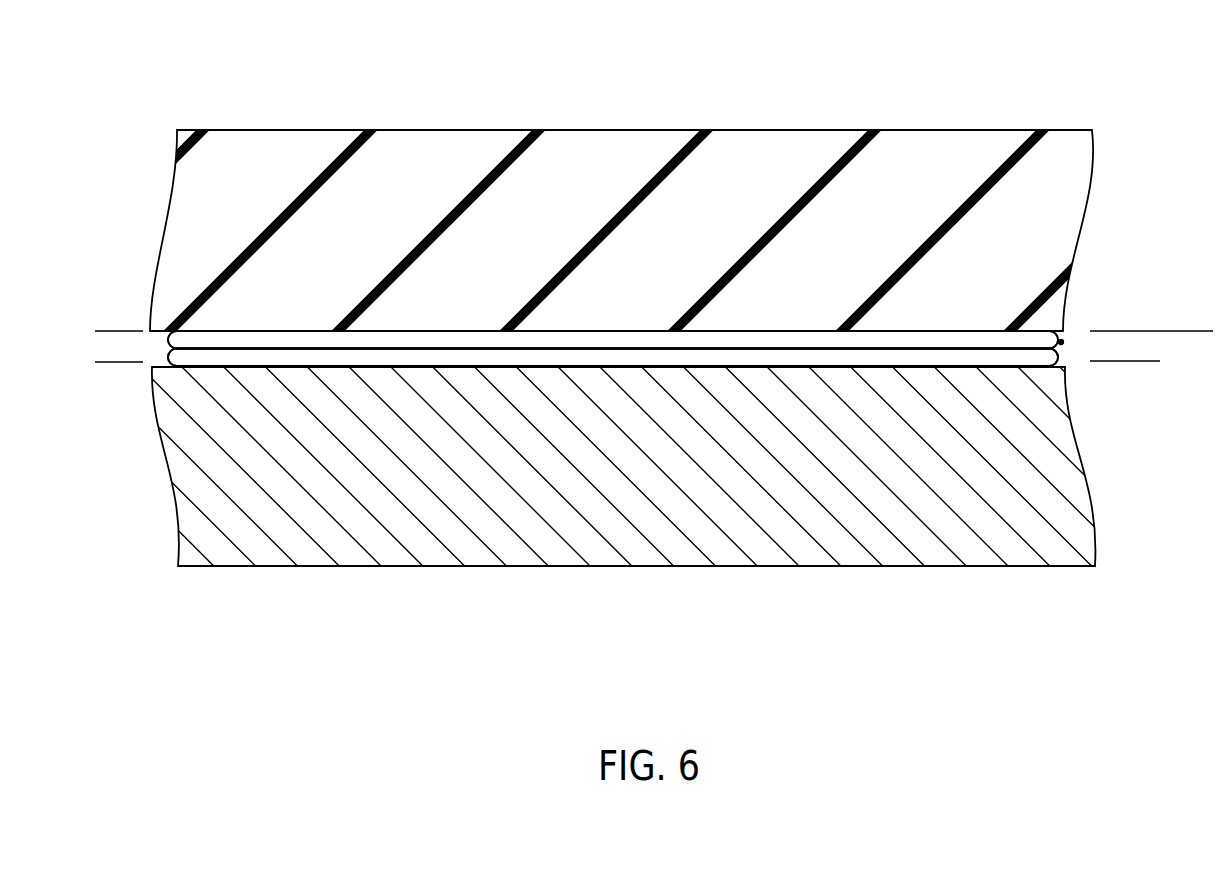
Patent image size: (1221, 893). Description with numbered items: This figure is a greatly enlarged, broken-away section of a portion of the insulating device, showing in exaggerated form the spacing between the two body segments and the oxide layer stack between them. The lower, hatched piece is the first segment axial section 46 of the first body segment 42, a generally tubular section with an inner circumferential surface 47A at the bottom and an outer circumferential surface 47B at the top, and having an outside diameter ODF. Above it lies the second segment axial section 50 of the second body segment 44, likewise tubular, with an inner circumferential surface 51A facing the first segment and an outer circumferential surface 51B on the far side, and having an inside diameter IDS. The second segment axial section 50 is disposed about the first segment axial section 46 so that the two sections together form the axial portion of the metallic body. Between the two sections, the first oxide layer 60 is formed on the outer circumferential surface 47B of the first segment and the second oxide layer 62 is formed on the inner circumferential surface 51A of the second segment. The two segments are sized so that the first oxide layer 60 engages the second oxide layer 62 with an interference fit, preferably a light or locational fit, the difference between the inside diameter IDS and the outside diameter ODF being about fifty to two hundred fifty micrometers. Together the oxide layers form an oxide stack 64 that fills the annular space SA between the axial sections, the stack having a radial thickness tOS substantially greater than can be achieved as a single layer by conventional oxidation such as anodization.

The first body segment 42 is at (387, 567).
The second body segment 44 is at (347, 130).
The first segment axial section 46 is at (773, 547).
The inner circumferential surface of first segment axial section 47A is at (498, 567).
The outer circumferential surface of first segment axial section 47B is at (417, 365).
The second segment axial section 50 is at (511, 147).
The inner circumferential surface of second segment axial section 51A is at (648, 332).
The outer circumferential surface of second segment axial section 51B is at (716, 130).
The first oxide layer 60 is at (890, 352).
The second oxide layer 62 is at (828, 337).
The oxide stack 64 is at (800, 340).
The annular space SA is at (1061, 342).
The radial thickness of oxide stack tOS is at (127, 398).
The outside diameter of first segment axial section ODF is at (1127, 361).
The inside diameter of second segment axial section IDS is at (1192, 331).